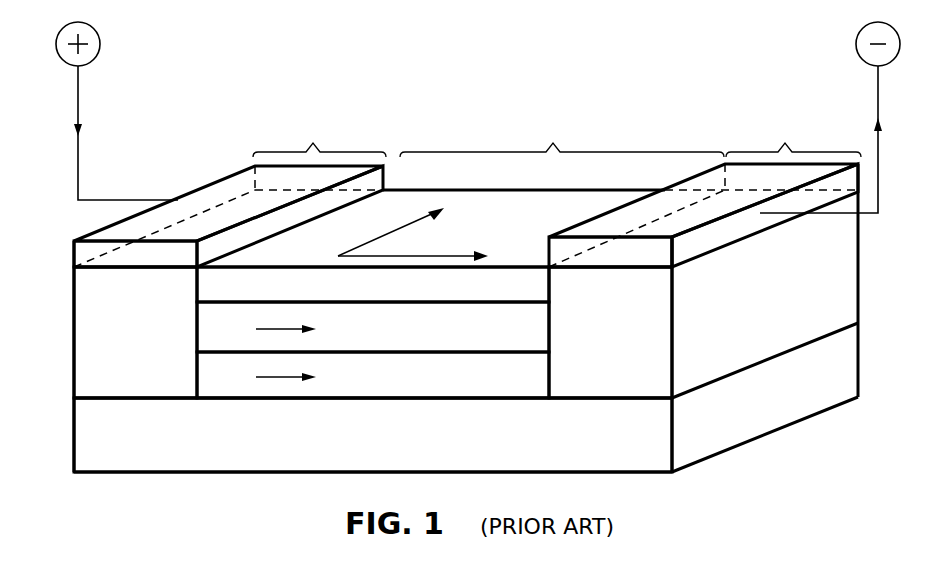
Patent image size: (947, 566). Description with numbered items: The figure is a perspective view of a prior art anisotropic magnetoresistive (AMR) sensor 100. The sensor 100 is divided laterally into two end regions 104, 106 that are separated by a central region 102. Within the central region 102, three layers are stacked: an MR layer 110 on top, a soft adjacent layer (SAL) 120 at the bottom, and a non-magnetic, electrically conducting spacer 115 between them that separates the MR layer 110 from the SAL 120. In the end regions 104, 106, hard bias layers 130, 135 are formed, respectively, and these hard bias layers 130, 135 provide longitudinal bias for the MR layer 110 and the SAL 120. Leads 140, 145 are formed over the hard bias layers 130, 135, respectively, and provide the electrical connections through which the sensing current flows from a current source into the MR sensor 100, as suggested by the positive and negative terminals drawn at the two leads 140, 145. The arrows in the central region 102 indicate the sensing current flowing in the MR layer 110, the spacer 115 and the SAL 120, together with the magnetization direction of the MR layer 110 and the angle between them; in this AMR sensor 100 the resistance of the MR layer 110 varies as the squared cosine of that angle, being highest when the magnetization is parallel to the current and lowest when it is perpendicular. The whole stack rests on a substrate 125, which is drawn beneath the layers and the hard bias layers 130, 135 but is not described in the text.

The AMR sensor 100 is at (632, 75).
The central region 102 is at (562, 134).
The end region 104 is at (319, 134).
The end region 106 is at (793, 134).
The MR layer 110 is at (222, 288).
The spacer 115 is at (222, 328).
The soft adjacent layer (SAL) 120 is at (237, 388).
The substrate 125 is at (635, 443).
The hard bias layer 130 is at (108, 333).
The hard bias layer 135 is at (635, 368).
The lead 140 is at (120, 257).
The lead 145 is at (637, 255).